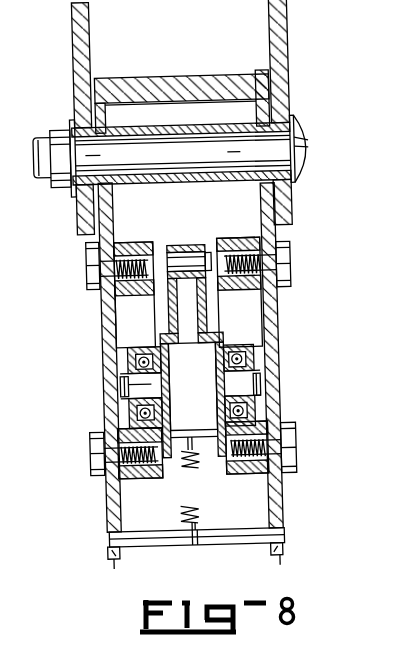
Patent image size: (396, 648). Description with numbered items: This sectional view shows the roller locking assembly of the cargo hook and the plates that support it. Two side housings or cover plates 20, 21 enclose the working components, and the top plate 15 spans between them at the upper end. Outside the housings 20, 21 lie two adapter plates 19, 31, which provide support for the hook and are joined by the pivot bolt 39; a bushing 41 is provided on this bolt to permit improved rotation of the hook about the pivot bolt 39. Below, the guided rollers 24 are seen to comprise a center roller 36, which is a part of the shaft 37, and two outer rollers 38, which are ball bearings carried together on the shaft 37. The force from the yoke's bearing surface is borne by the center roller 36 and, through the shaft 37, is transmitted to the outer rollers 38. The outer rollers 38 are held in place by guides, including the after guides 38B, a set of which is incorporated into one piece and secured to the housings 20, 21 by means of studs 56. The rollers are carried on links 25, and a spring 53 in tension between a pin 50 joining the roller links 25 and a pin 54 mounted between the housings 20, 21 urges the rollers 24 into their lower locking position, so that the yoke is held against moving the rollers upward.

The adapter plate 31 is at (97, 40).
The adapter plate 19 is at (297, 38).
The top plate 15 is at (139, 76).
The bushing 41 is at (93, 122).
The pivot bolt 39 is at (315, 183).
The links 25 is at (185, 245).
The guided rollers 24 is at (254, 357).
The center roller 36 is at (199, 397).
The outer rollers 38 is at (150, 350).
The after guides 38B is at (153, 318).
The shaft 37 is at (262, 387).
The studs 56 is at (90, 259).
The side housing 20 is at (95, 503).
The side housing 21 is at (271, 508).
The pin 54 is at (248, 547).
The pin 50 is at (199, 450).
The spring 53 is at (173, 515).